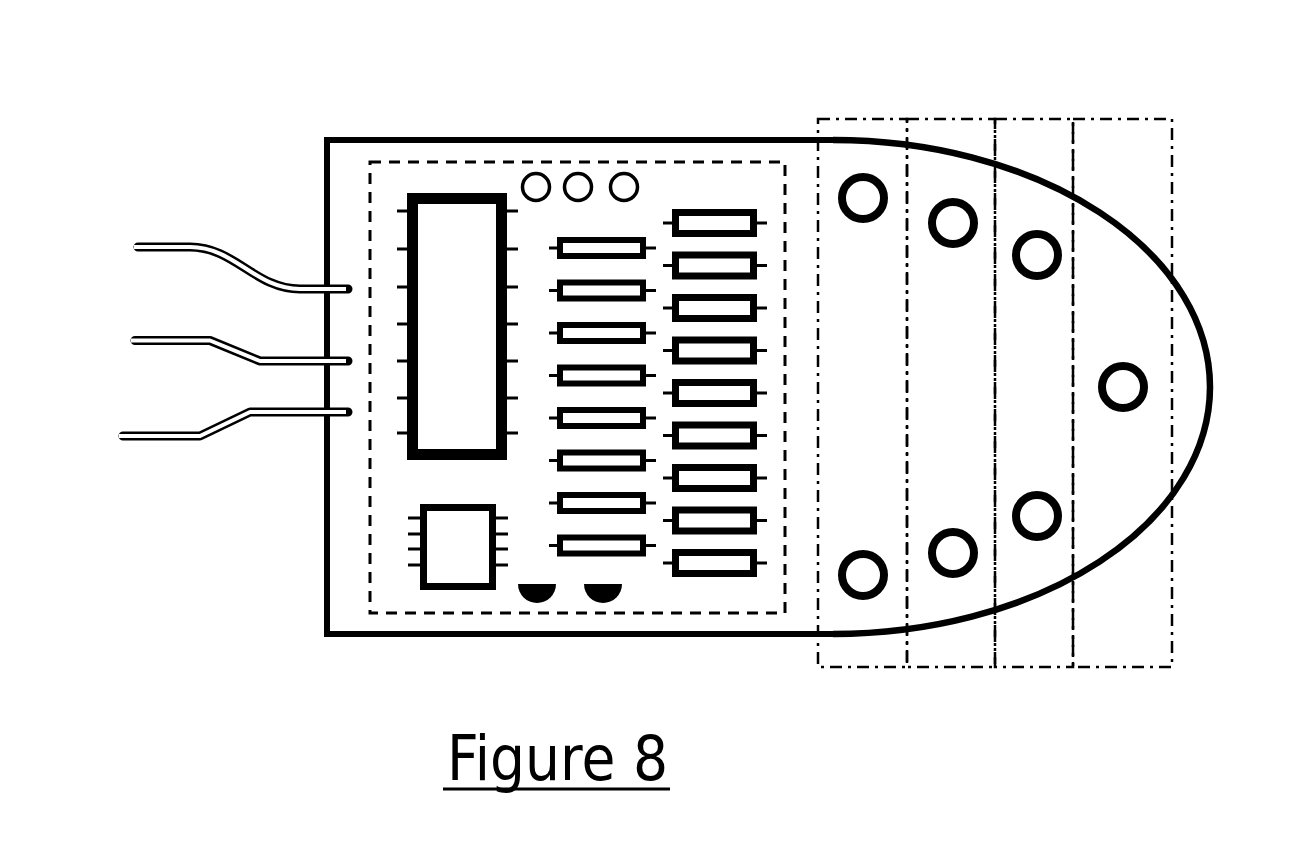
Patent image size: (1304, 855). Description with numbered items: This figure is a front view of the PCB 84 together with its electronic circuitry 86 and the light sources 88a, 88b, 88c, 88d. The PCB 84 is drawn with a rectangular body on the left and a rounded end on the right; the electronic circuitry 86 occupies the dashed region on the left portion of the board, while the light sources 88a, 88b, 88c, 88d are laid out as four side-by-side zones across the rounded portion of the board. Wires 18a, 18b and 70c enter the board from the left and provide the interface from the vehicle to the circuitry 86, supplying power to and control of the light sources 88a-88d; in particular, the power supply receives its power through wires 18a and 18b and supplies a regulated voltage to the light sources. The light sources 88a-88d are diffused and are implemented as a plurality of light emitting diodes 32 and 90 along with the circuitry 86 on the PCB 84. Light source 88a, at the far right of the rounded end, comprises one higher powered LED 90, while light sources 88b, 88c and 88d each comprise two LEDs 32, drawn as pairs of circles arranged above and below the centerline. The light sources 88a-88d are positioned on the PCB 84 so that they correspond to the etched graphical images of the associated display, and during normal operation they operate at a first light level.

The PCB 84 is at (733, 140).
The electronic circuitry 86 is at (480, 163).
The wire 18a is at (160, 246).
The wire 18b is at (158, 339).
The wire 70c is at (148, 435).
The light emitting diode 32 is at (935, 244).
The higher powered LED 90 is at (1147, 370).
The light source 88a is at (1142, 667).
The light source 88b is at (1040, 667).
The light source 88c is at (952, 667).
The light source 88d is at (836, 667).